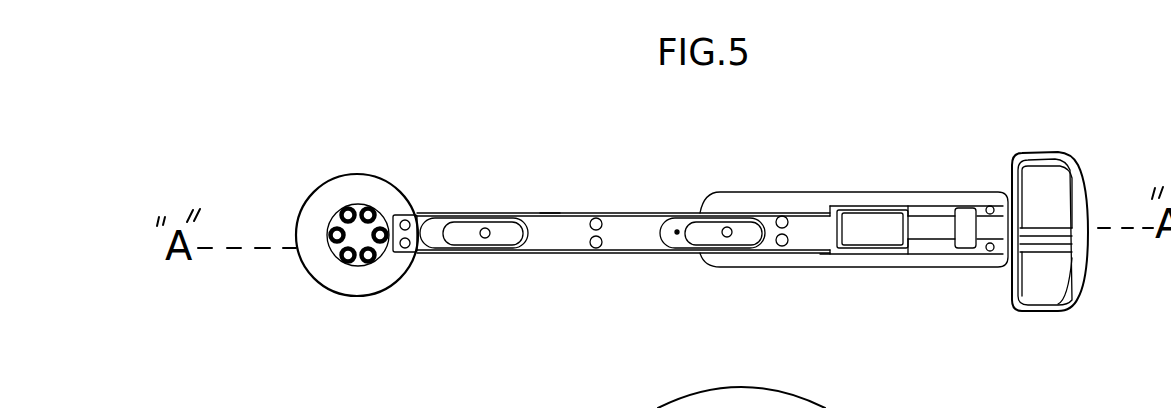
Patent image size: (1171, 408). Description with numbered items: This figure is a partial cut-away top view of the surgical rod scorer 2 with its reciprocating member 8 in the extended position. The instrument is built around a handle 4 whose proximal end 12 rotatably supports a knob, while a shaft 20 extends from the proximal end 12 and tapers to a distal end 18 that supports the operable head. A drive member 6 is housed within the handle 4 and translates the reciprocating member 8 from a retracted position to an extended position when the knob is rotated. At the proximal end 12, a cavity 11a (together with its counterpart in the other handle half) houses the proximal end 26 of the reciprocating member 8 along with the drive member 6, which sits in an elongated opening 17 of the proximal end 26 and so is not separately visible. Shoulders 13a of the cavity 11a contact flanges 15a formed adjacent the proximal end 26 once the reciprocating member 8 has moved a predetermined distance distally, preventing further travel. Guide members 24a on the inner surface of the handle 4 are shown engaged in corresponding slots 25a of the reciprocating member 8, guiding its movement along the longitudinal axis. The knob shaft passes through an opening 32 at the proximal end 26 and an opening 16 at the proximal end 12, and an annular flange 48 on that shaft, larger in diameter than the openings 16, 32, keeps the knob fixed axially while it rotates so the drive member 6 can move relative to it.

The surgical rod scorer 2 is at (1117, 119).
The handle 4 is at (712, 288).
The drive member 6 is at (398, 198).
The reciprocating member 8 is at (630, 233).
The cavity 11a is at (931, 262).
The proximal end 12 is at (920, 210).
The shoulders 13a is at (826, 208).
The flanges 15a is at (834, 207).
The opening 16 is at (983, 258).
The elongated opening 17 is at (853, 258).
The distal end 18 is at (700, 210).
The shaft 20 is at (552, 211).
The guide members 24a is at (508, 233).
The slot 25a is at (433, 228).
The proximal end 26 is at (840, 210).
The opening 32 is at (907, 205).
The annular flange 48 is at (966, 220).